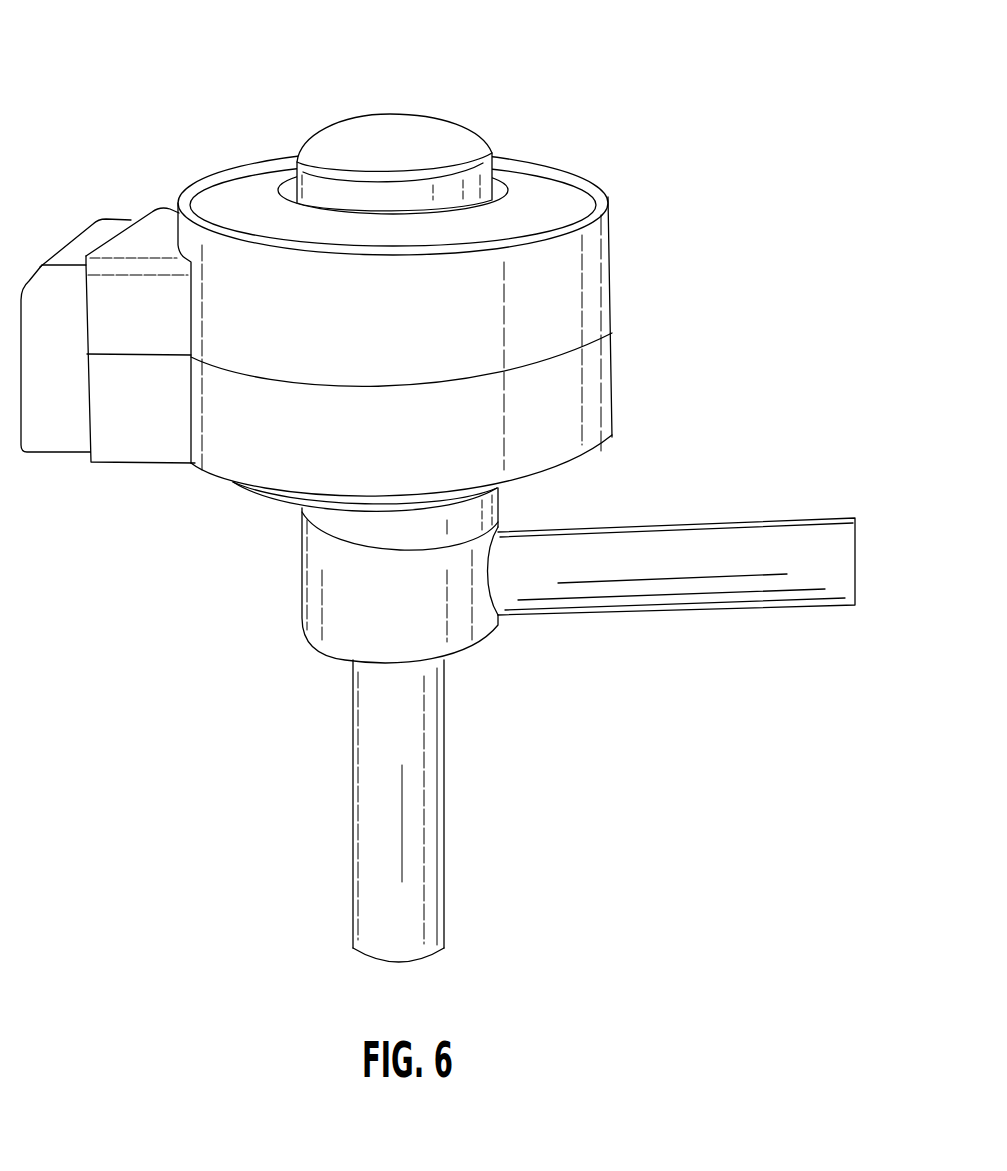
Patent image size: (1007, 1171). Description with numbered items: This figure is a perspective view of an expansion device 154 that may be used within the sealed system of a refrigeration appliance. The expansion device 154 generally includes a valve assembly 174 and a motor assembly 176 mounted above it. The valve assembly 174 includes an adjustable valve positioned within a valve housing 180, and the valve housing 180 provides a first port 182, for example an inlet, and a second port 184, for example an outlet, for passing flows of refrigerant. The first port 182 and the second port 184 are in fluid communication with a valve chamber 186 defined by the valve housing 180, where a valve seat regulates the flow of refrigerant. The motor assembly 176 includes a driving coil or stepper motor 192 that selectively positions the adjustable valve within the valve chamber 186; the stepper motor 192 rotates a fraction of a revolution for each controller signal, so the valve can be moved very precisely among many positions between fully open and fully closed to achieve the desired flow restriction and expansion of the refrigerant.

The expansion device 154 is at (476, 533).
The motor assembly 176 is at (610, 273).
The stepper motor 192 is at (410, 197).
The valve assembly 174 is at (300, 587).
The valve chamber 186 is at (408, 611).
The second port 184 is at (860, 562).
The valve housing 180 is at (353, 823).
The first port 182 is at (373, 960).